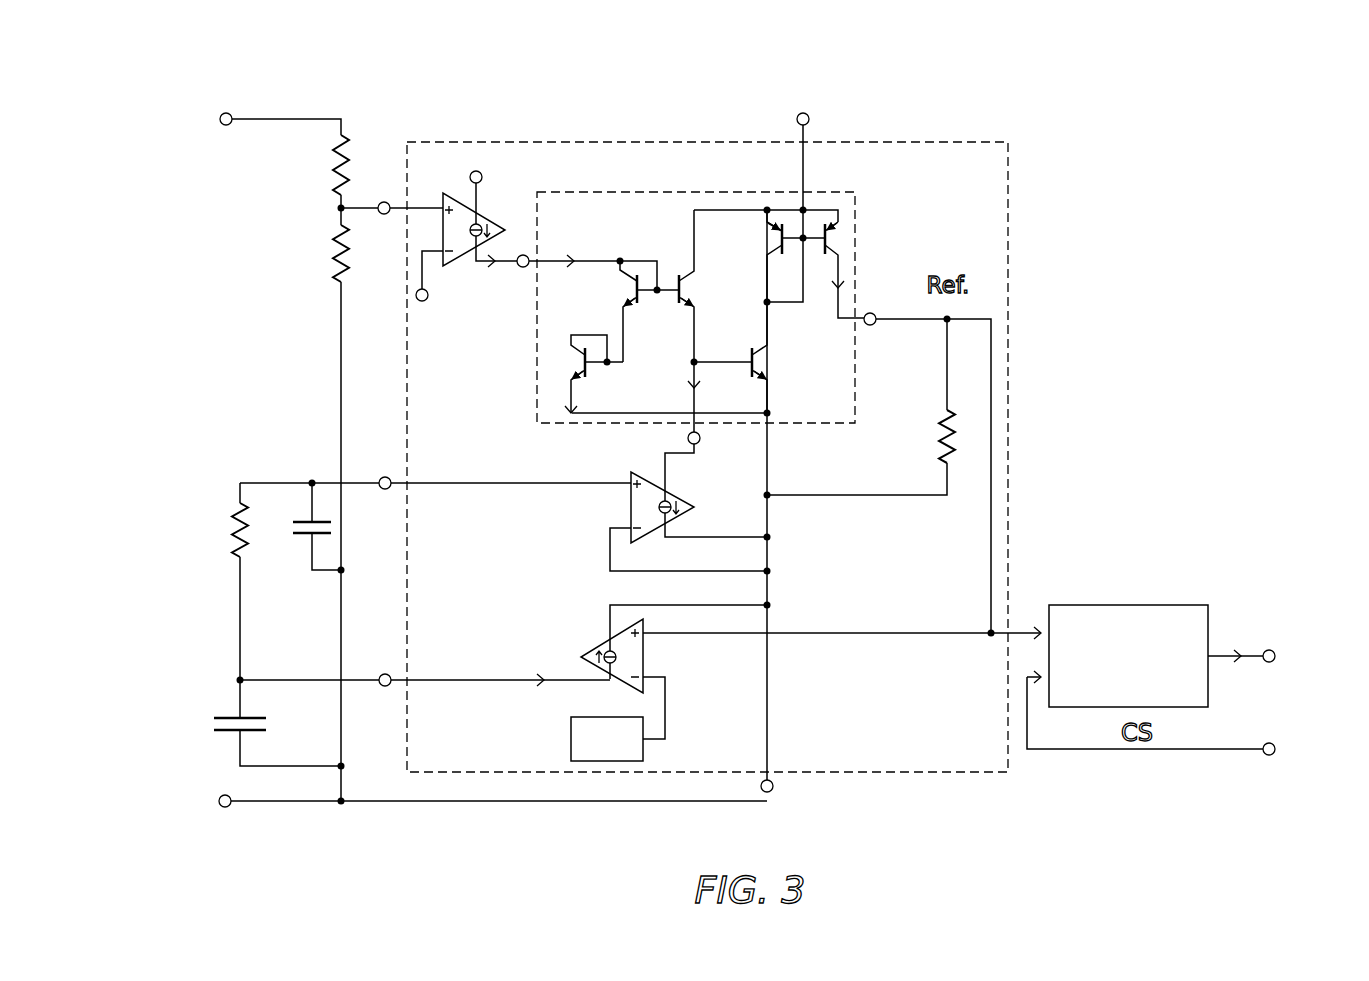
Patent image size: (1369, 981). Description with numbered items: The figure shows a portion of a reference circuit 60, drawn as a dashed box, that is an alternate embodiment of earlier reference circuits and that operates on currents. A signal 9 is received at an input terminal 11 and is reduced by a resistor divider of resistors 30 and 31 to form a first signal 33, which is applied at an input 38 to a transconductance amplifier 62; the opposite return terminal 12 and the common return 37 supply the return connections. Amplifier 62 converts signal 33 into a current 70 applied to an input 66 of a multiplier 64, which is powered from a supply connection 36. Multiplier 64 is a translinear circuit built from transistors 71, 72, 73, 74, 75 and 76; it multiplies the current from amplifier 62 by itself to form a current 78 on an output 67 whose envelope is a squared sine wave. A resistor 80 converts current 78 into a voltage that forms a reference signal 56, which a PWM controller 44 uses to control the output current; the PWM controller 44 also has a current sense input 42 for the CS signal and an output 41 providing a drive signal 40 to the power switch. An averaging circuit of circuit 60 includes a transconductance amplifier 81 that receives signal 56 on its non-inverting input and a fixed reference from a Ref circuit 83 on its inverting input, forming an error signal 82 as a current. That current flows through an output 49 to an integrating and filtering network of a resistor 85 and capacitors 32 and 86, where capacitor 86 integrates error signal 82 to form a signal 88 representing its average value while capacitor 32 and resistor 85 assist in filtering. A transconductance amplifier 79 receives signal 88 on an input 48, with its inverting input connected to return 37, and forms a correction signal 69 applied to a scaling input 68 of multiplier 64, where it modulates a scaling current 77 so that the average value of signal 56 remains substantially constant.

The signal 9 is at (276, 117).
The input terminal 11 is at (221, 115).
The return terminal 12 is at (232, 810).
The resistor 30 is at (328, 160).
The resistor 31 is at (328, 258).
The capacitor 32 is at (300, 545).
The first signal 33 is at (360, 212).
The supply input 36 is at (808, 114).
The return 37 is at (482, 176).
The input 38 is at (384, 200).
The drive signal 40 is at (1252, 660).
The output 41 is at (1275, 651).
The current sense input 42 is at (1267, 757).
The PWM controller 44 is at (1130, 604).
The input 48 is at (385, 476).
The output 49 is at (385, 693).
The reference signal 56 is at (995, 405).
The reference circuit 60 is at (1008, 238).
The transconductance amplifier 62 is at (470, 270).
The multiplier 64 is at (618, 190).
The input 66 is at (520, 270).
The output 67 is at (873, 326).
The scaling input 68 is at (699, 441).
The correction signal 69 is at (676, 449).
The current 70 is at (574, 256).
The transistor 71 is at (590, 366).
The transistor 72 is at (640, 300).
The transistor 73 is at (675, 272).
The transistor 74 is at (750, 352).
The transistor 75 is at (766, 245).
The transistor 76 is at (836, 243).
The scaling current 77 is at (700, 387).
The current 78 is at (832, 300).
The transconductance amplifier 79 is at (690, 524).
The resistor 80 is at (938, 432).
The transconductance amplifier 81 is at (596, 644).
The error signal 82 is at (522, 675).
The fixed reference circuit 83 is at (568, 737).
The resistor 85 is at (228, 515).
The capacitor 86 is at (228, 712).
The signal 88 is at (485, 495).